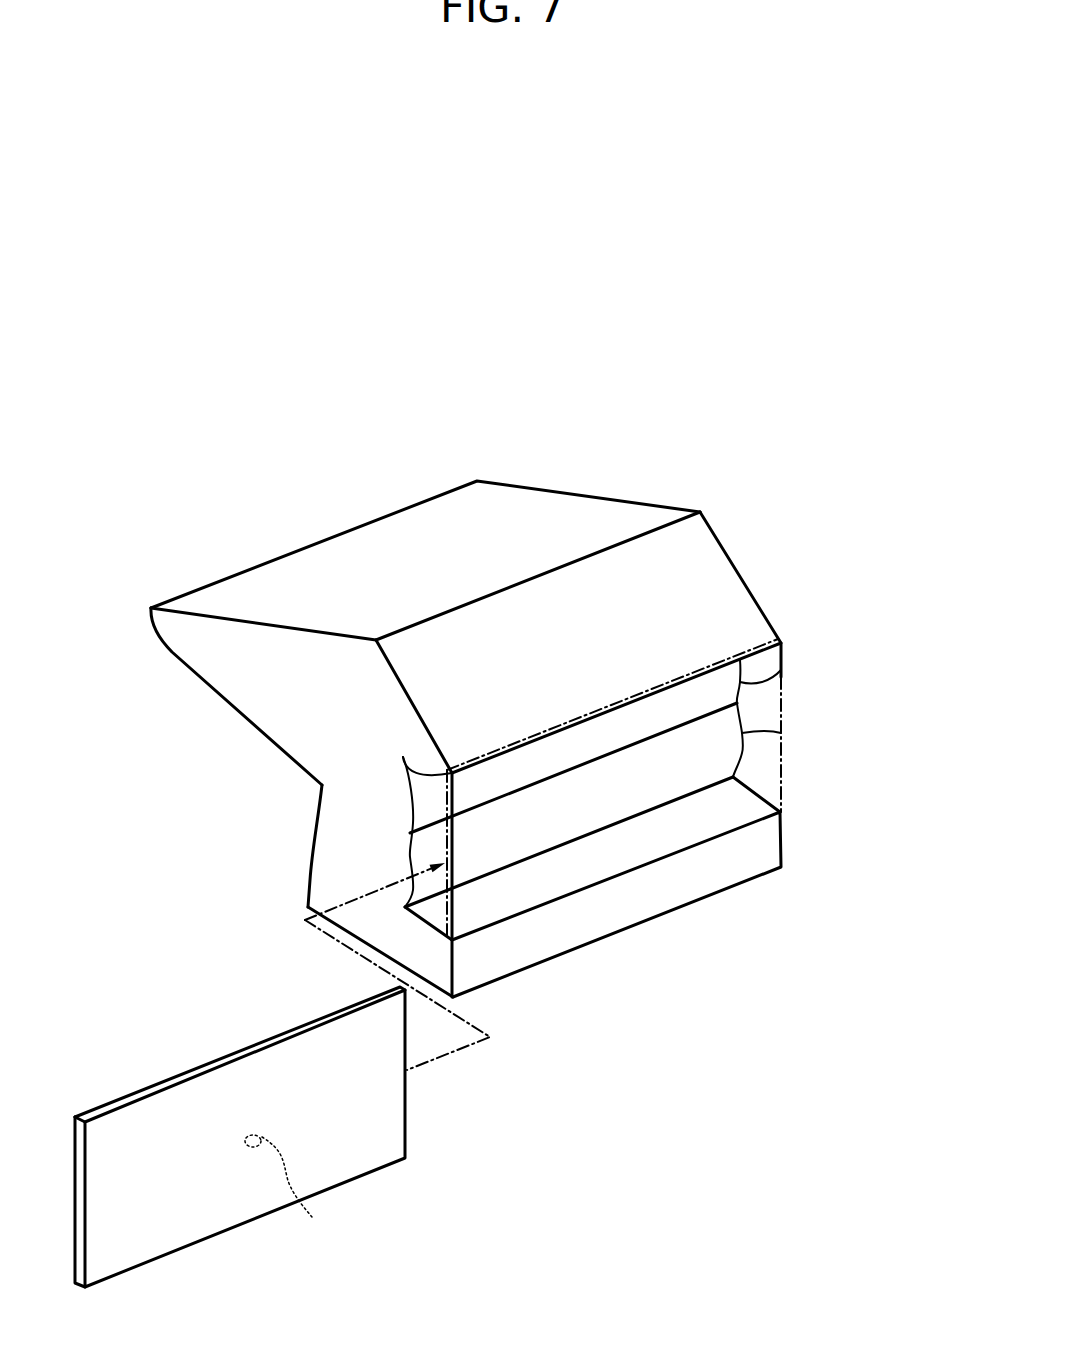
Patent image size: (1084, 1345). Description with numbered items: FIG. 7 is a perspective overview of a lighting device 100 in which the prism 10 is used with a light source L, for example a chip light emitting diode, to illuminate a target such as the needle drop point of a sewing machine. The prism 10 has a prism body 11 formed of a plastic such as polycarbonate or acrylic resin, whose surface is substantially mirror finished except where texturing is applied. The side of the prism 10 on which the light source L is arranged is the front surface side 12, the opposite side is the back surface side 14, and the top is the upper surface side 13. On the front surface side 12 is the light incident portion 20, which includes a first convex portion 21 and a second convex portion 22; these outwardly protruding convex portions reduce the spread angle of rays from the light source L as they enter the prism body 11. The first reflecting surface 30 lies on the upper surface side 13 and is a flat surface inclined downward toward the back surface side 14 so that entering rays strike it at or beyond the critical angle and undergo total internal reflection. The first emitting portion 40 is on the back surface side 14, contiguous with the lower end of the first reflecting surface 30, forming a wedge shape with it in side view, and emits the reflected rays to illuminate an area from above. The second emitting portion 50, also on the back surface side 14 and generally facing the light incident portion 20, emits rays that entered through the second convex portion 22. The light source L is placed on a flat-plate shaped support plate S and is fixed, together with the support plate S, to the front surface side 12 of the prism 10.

The lighting device 100 is at (725, 202).
The prism 10 is at (538, 340).
The prism body 11 is at (468, 480).
The front surface side 12 is at (877, 650).
The upper surface side 13 is at (607, 463).
The back surface side 14 is at (203, 778).
The light incident portion 20 is at (842, 727).
The first convex portion 21 is at (782, 677).
The second convex portion 22 is at (782, 740).
The first reflecting surface 30 is at (423, 560).
The first emitting portion 40 is at (217, 697).
The second emitting portion 50 is at (310, 833).
The light source L is at (367, 1049).
The support plate S is at (185, 1202).